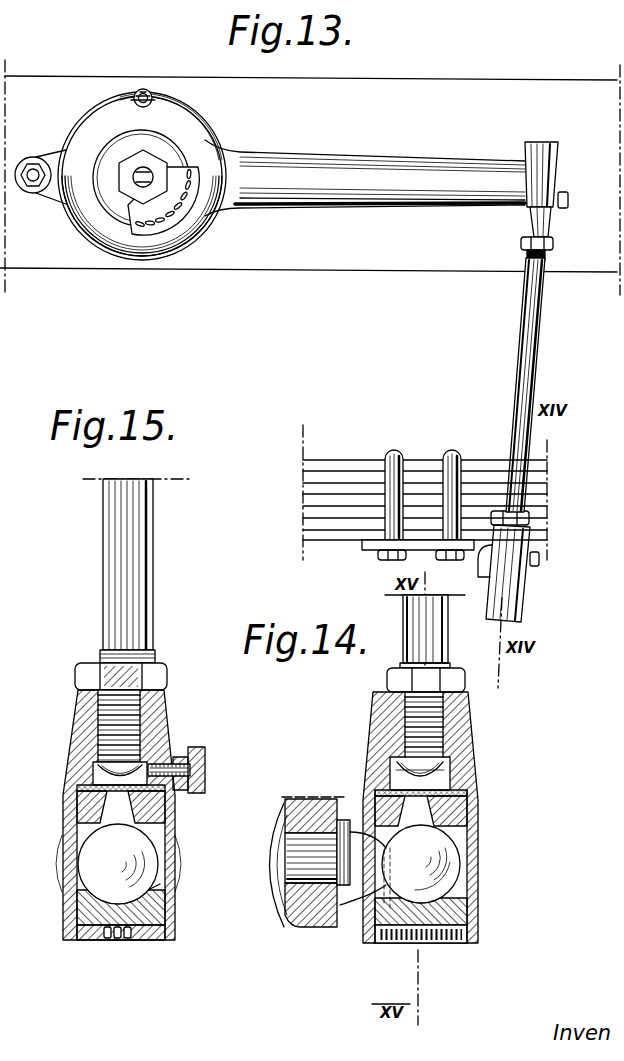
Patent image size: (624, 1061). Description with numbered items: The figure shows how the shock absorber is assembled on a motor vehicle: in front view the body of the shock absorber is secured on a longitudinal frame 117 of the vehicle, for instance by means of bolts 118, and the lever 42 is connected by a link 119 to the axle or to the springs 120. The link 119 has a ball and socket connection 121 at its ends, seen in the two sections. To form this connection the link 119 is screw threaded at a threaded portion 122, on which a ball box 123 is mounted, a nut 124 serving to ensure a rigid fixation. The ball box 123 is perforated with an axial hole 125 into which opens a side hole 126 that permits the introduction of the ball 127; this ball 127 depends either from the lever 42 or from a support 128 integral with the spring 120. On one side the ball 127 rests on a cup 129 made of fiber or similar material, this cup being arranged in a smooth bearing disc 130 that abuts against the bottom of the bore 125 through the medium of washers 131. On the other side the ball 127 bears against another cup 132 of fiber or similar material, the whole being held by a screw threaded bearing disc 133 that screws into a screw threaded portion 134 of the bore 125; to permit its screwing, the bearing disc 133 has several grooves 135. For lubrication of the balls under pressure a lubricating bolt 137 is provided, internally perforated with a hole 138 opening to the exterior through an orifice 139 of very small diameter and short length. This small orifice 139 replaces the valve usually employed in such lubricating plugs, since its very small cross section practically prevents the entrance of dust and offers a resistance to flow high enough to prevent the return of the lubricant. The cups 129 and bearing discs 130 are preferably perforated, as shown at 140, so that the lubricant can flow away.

In FIG. 13, the lever 42 is at (375, 182).
In FIG. 14, the lever 42 is at (328, 800).
In FIG. 13, the longitudinal frame 117 is at (71, 258).
In FIG. 13, the bolts 118 is at (34, 170).
In FIG. 13, the link 119 is at (531, 300).
In FIG. 15, the link 119 is at (147, 623).
In FIG. 13, the springs 120 is at (377, 468).
In FIG. 13, the ball and socket connection 121 is at (525, 206).
In FIG. 15, the screw threaded portion 122 is at (163, 717).
In FIG. 15, the ball box 123 is at (77, 722).
In FIG. 15, the nut 124 is at (168, 682).
In FIG. 15, the axial hole 125 is at (66, 838).
In FIG. 14, the side hole 126 is at (358, 893).
In FIG. 14, the ball 127 is at (446, 852).
In FIG. 14, the support 128 is at (460, 586).
In FIG. 15, the cup 129 is at (77, 820).
In FIG. 15, the smooth bearing disc 130 is at (176, 814).
In FIG. 15, the washers 131 is at (180, 754).
In FIG. 15, the cup 132 is at (171, 898).
In FIG. 15, the screw threaded bearing disc 133 is at (77, 913).
In FIG. 15, the screw threaded portion 134 is at (77, 882).
In FIG. 14, the grooves 135 is at (378, 944).
In FIG. 15, the grooves 135 is at (117, 940).
In FIG. 15, the lubricating bolt 137 is at (205, 788).
In FIG. 15, the hole 138 is at (206, 760).
In FIG. 15, the orifice 139 is at (192, 771).
In FIG. 15, the perforations 140 is at (77, 792).